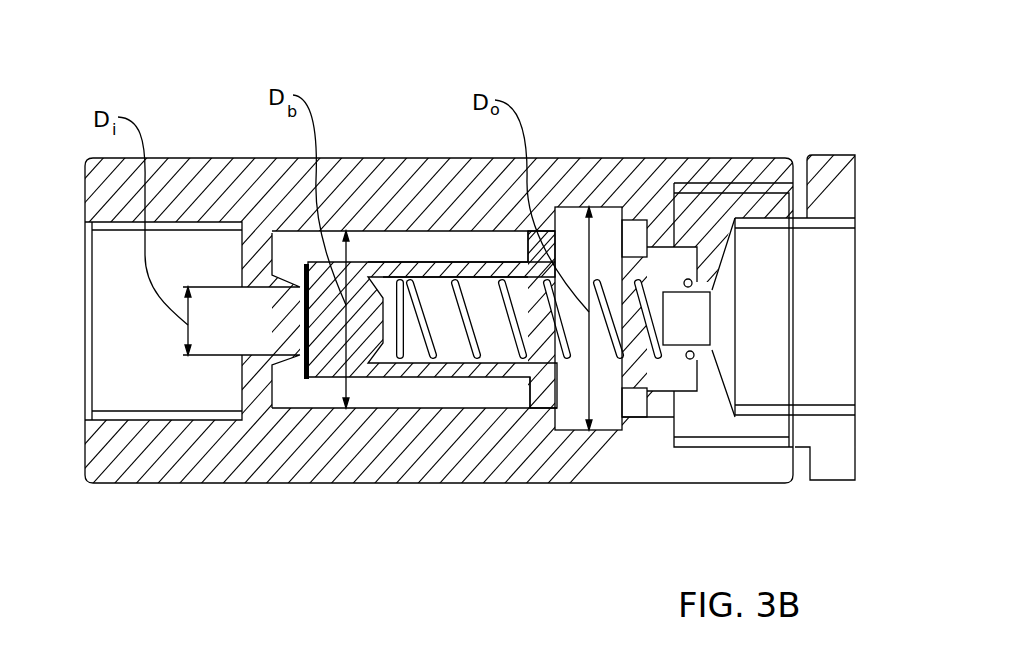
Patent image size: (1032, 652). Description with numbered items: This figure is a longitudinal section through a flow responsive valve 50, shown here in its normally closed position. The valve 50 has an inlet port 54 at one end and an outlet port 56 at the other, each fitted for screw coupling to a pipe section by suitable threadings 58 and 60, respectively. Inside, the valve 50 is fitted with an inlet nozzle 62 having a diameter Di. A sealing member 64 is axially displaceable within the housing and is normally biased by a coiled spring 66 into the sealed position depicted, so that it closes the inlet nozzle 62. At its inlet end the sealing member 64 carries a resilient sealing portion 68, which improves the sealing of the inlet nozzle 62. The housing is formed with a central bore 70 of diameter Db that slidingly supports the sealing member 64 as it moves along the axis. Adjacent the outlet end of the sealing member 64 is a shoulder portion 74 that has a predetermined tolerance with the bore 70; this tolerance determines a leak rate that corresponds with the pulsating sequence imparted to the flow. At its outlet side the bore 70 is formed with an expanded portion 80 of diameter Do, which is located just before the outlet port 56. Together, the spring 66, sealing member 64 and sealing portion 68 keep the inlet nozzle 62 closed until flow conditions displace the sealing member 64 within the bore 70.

The valve 50 is at (568, 122).
The inlet port 54 is at (130, 380).
The outlet port 56 is at (828, 272).
The threading 58 is at (127, 236).
The threading 60 is at (826, 405).
The inlet nozzle 62 is at (300, 316).
The sealing member 64 is at (378, 262).
The coiled spring 66 is at (487, 327).
The resilient sealing portion 68 is at (303, 368).
The central bore 70 is at (363, 390).
The shoulder portion 74 is at (537, 390).
The expanded portion 80 is at (610, 405).